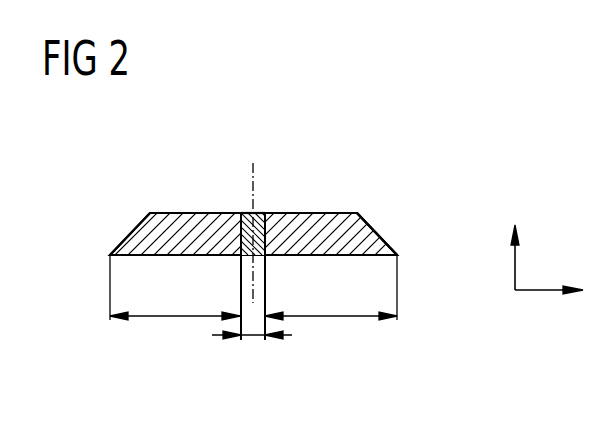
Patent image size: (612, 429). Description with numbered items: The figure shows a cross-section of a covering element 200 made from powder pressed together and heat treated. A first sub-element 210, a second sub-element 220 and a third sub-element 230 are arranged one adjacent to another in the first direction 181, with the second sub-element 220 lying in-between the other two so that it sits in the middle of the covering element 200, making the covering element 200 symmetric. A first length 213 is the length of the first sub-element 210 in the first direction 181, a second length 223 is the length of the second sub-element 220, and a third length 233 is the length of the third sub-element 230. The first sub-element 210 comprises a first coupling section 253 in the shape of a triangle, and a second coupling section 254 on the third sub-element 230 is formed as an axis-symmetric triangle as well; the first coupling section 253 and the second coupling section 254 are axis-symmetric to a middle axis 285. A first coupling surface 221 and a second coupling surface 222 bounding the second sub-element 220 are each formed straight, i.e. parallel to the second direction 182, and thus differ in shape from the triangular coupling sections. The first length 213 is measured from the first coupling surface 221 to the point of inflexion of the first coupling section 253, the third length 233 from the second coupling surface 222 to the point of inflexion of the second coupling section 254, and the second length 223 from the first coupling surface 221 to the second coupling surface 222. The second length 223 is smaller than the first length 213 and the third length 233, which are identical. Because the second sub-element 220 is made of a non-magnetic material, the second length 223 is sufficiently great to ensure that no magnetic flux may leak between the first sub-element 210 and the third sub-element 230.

The covering element 200 is at (277, 241).
The first sub-element 210 is at (157, 213).
The first length 213 is at (178, 317).
The second sub-element 220 is at (264, 232).
The first coupling surface 221 is at (230, 213).
The second coupling surface 222 is at (274, 220).
The second length 223 is at (245, 337).
The third sub-element 230 is at (343, 213).
The third length 233 is at (333, 317).
The first coupling section 253 is at (127, 216).
The second coupling section 254 is at (377, 228).
The middle axis 285 is at (253, 165).
The first direction 181 is at (535, 293).
The second direction 182 is at (515, 268).